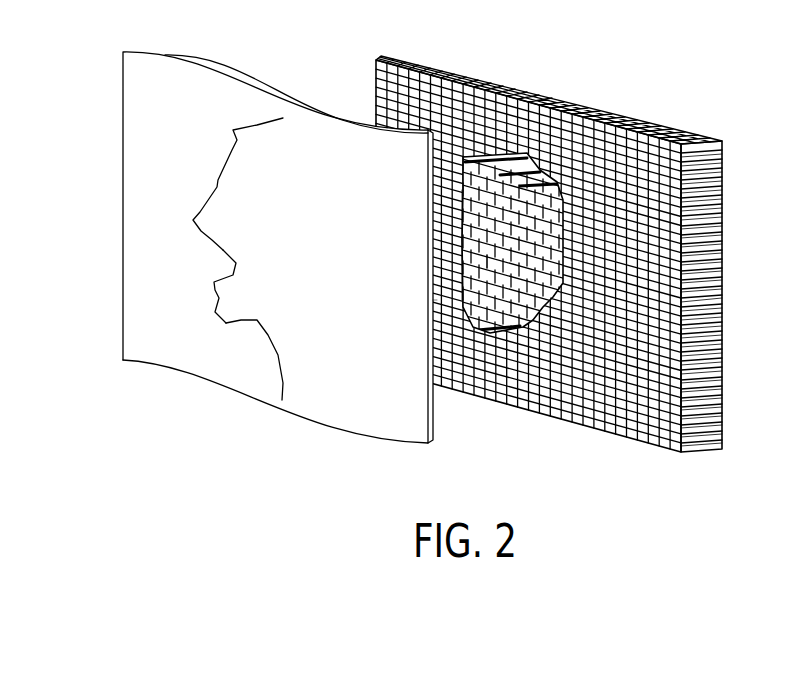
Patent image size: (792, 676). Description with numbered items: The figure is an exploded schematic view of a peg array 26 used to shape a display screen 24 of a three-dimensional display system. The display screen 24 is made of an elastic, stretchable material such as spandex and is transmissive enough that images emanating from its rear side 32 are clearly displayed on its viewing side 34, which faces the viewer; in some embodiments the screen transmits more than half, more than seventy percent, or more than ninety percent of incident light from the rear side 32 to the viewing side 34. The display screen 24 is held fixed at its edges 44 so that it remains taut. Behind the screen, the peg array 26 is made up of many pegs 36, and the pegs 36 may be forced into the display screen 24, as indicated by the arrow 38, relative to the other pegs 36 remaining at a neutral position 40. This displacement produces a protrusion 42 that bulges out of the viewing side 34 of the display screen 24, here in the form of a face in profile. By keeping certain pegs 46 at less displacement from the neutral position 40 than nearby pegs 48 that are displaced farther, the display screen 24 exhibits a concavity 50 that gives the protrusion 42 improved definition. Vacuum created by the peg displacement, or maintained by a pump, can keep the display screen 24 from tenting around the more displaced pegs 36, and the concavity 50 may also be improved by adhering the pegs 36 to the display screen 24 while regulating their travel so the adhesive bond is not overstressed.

The display screen 24 is at (242, 226).
The peg array 26 is at (567, 241).
The rear side 32 is at (440, 412).
The viewing side 34 is at (153, 160).
The pegs 36 is at (487, 173).
The arrow 38 is at (488, 246).
The neutral position 40 is at (650, 283).
The protrusion 42 is at (272, 259).
The edges 44 is at (210, 63).
The pegs with less displacement 46 is at (487, 272).
The pegs with larger displacement 48 is at (462, 203).
The concavity 50 is at (240, 267).